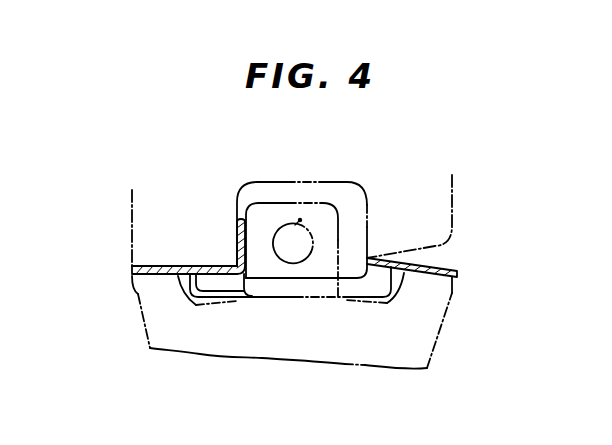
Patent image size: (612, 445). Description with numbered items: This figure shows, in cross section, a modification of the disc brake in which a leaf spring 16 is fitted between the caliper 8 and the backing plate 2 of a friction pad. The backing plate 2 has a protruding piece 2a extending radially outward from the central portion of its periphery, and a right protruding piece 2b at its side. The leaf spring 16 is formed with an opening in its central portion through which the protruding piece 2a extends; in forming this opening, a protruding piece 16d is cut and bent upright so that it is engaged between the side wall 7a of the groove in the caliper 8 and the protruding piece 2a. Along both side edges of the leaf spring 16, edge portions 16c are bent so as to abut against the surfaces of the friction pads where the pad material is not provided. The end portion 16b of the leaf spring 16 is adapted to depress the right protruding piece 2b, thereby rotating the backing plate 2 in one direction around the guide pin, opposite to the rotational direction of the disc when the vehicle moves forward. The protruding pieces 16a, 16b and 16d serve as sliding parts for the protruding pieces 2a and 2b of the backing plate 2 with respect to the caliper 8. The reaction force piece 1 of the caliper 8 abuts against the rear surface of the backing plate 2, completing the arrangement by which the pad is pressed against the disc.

The caliper 8 is at (131, 242).
The side wall 7a is at (242, 186).
The reaction force piece 1 is at (282, 227).
The protruding piece 2a is at (318, 212).
The leaf spring 16 is at (294, 272).
The protruding piece 16a is at (170, 266).
The end portion 16b is at (422, 258).
The edge portion 16c is at (273, 295).
The protruding piece 16d is at (237, 238).
The backing plate 2 is at (209, 353).
The protruding piece 2b is at (140, 298).